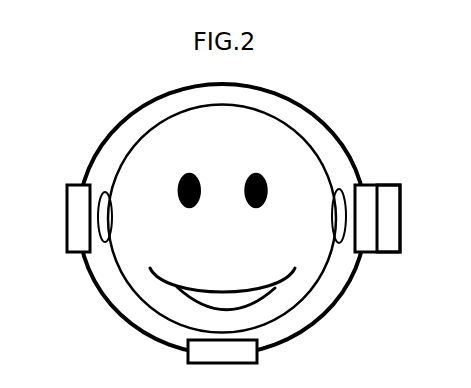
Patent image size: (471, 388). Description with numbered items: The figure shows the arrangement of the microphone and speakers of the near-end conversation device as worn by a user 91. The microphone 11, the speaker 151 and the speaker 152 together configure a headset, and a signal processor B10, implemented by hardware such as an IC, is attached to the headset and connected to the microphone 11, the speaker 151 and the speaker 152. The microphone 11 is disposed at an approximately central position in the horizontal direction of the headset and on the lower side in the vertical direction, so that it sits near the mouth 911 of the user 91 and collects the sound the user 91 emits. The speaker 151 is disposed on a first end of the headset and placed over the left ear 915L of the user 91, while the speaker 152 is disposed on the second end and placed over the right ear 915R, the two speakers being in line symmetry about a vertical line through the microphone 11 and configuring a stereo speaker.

The microphone 11 is at (257, 351).
The user 91 is at (319, 277).
The mouth 911 is at (266, 297).
The right ear 915R is at (106, 191).
The left ear 915L is at (339, 190).
The speaker 151 is at (390, 215).
The speaker 152 is at (66, 219).
The signal processor B10 is at (389, 185).